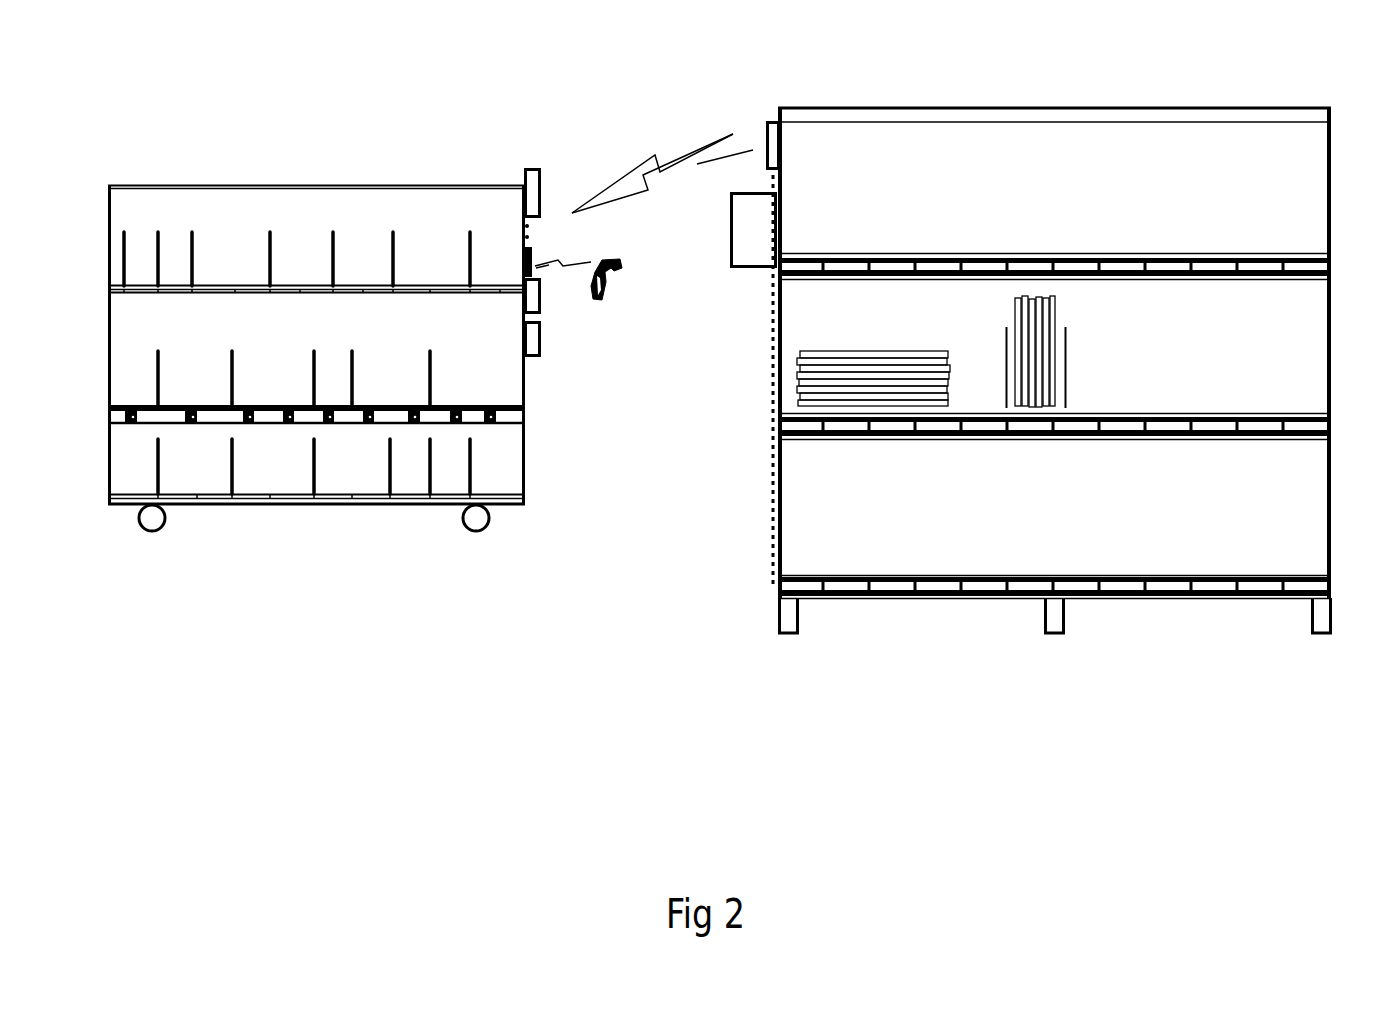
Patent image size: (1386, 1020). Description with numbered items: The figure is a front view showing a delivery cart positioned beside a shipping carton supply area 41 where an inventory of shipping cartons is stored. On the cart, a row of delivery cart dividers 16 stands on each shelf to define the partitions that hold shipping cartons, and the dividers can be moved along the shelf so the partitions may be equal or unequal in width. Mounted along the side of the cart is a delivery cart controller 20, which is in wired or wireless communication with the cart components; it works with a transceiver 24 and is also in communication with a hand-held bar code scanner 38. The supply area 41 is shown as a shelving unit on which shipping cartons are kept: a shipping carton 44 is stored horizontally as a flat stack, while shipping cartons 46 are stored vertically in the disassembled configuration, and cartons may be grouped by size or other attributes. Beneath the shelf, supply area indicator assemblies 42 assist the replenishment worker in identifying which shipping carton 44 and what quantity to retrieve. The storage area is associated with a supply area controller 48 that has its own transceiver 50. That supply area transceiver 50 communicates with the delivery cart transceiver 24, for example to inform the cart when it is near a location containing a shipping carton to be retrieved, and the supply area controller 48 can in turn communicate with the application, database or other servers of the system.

The delivery cart divider 16 is at (158, 240).
The delivery cart controller 20 is at (535, 256).
The transceiver 24 is at (540, 191).
The bar code scanner 38 is at (616, 262).
The shipping carton supply area 41 is at (1046, 50).
The supply area indicator assemblies 42 is at (952, 448).
The shipping carton 44 is at (830, 351).
The shipping cartons 46 is at (1015, 302).
The supply area controller 48 is at (731, 262).
The transceiver 50 is at (767, 137).